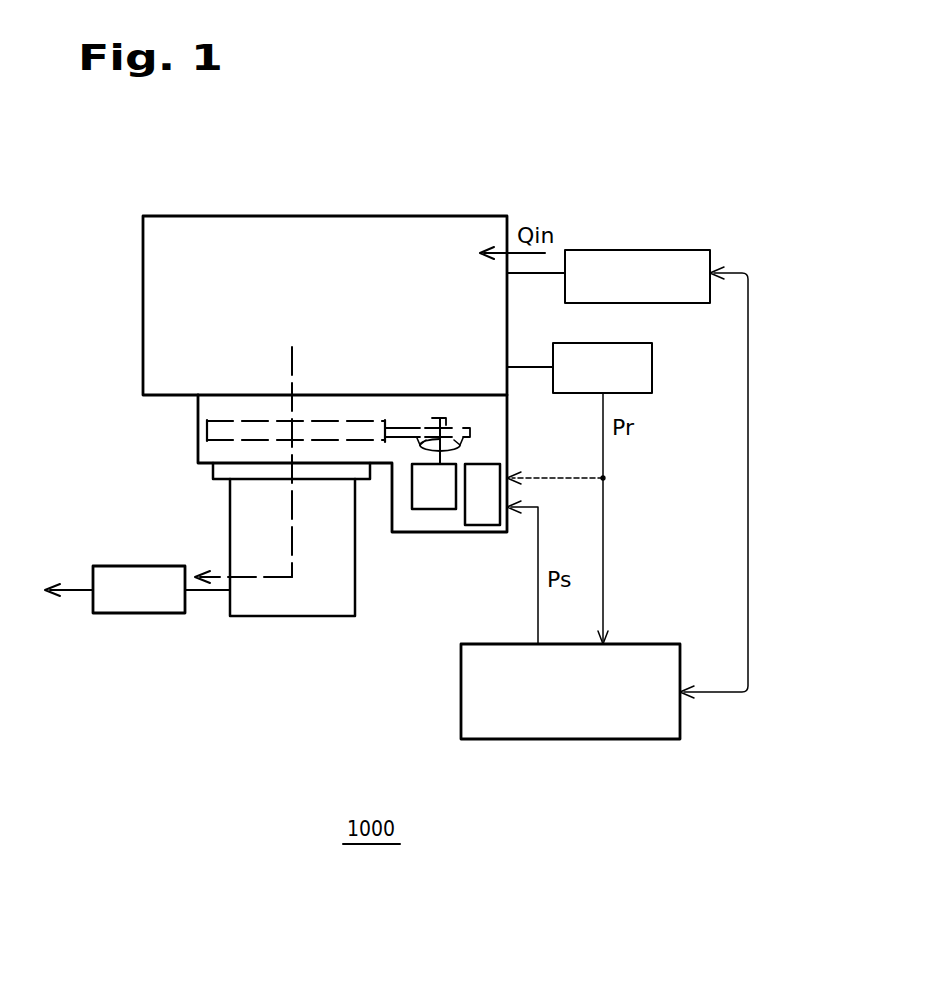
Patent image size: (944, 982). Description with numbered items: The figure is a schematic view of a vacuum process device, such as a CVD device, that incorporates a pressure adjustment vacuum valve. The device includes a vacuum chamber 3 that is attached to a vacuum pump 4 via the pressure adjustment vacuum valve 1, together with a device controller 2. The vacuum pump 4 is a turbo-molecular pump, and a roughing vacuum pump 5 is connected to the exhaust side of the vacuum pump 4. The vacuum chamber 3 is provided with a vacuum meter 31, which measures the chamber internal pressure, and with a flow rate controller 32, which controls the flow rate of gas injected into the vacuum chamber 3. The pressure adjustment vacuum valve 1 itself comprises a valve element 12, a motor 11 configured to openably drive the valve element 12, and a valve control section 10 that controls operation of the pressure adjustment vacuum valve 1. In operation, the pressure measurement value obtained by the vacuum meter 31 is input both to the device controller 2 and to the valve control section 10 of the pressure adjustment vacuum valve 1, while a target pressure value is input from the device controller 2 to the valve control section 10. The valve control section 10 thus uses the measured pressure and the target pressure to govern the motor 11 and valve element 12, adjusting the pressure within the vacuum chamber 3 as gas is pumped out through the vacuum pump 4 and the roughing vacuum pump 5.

The pressure adjustment vacuum valve 1 is at (197, 432).
The device controller 2 is at (552, 740).
The vacuum chamber 3 is at (326, 216).
The vacuum pump 4 is at (305, 616).
The roughing vacuum pump 5 is at (138, 613).
The valve control section 10 is at (482, 527).
The motor 11 is at (433, 510).
The valve element 12 is at (218, 442).
The vacuum meter 31 is at (655, 368).
The flow rate controller 32 is at (636, 250).